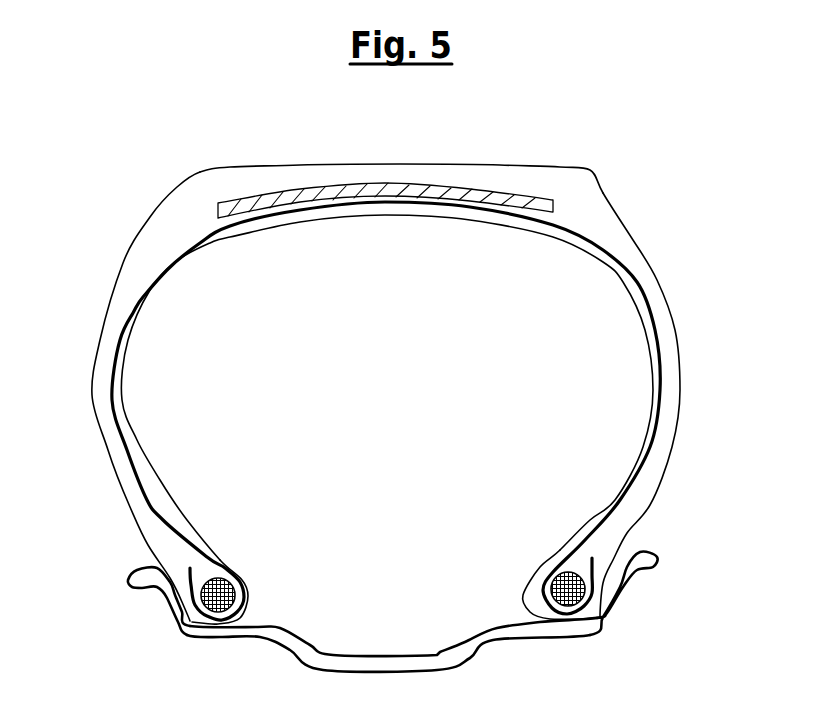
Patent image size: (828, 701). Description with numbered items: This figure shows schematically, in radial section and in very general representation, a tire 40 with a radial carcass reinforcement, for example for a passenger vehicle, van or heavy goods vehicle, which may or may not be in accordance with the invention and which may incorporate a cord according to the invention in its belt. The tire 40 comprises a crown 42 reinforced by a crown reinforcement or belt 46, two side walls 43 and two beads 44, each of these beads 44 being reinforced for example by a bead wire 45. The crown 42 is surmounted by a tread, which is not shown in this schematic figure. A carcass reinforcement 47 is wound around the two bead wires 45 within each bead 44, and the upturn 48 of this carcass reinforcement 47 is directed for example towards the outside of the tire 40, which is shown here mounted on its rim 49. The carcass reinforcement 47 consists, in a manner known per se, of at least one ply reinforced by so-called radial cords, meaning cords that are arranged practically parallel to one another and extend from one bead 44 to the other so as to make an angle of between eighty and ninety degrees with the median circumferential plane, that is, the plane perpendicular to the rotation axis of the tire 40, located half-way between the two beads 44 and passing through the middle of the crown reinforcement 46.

The tire 40 is at (414, 370).
The crown 42 is at (515, 180).
The side walls 43 is at (102, 387).
The beads 44 is at (222, 554).
The bead wire 45 is at (237, 589).
The crown reinforcement or belt 46 is at (447, 180).
The carcass reinforcement 47 is at (136, 306).
The upturn 48 is at (146, 537).
The rim 49 is at (178, 604).